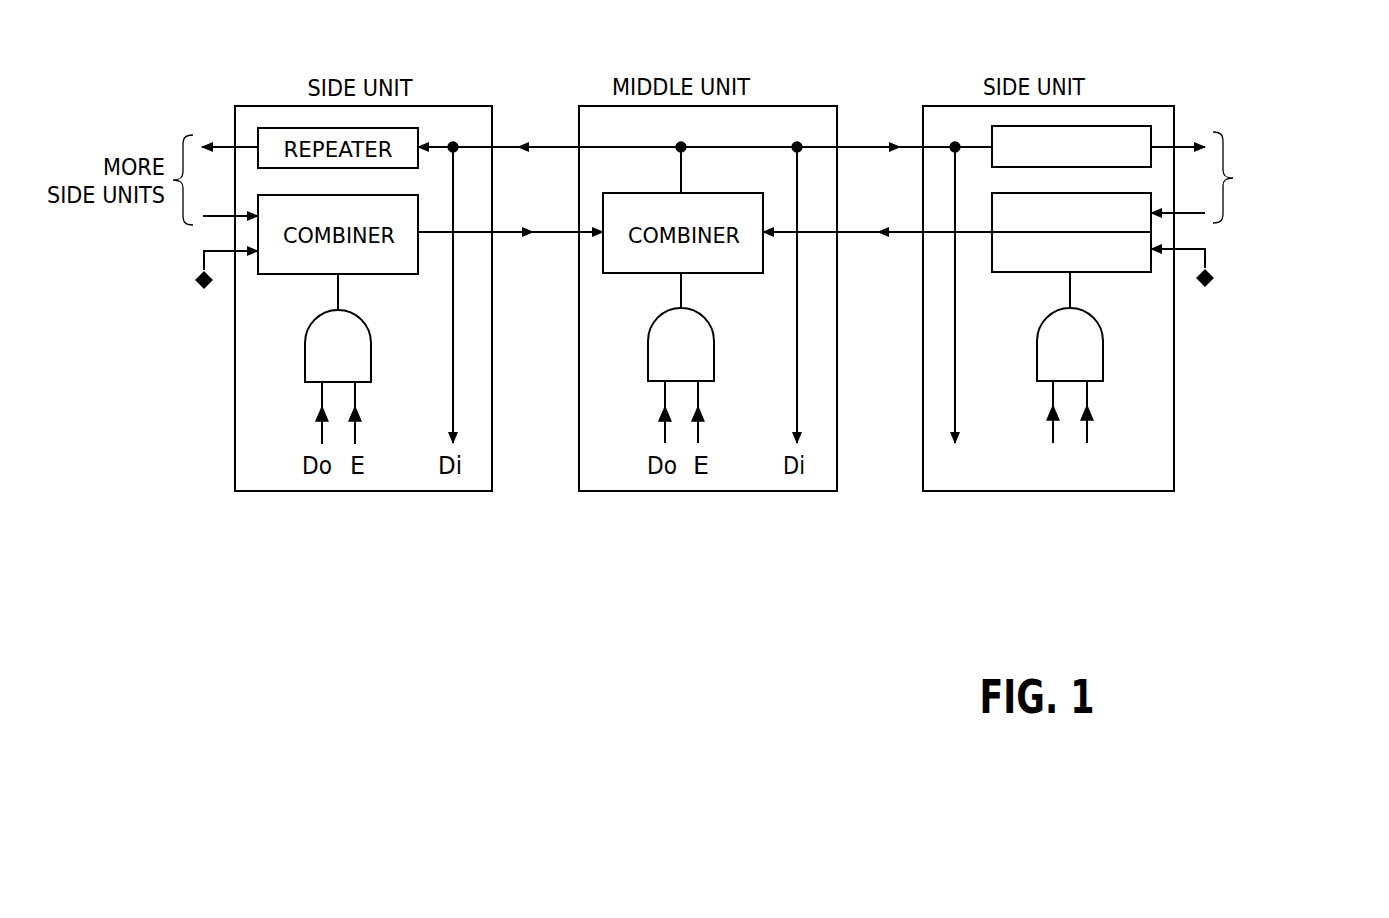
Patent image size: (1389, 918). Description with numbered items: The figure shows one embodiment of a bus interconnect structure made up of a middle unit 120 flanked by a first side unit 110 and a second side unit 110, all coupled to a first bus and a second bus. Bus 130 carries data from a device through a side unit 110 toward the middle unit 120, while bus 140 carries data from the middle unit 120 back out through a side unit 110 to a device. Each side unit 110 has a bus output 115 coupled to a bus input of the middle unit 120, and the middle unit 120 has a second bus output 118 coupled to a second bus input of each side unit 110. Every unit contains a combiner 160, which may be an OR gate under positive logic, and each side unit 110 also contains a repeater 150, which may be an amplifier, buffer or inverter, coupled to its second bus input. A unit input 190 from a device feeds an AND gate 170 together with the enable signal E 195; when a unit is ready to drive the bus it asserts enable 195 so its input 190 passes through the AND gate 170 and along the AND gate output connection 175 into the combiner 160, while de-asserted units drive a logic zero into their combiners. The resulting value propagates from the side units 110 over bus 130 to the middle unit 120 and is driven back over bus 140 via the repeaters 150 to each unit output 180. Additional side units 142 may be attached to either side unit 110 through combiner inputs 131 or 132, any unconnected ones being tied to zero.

The side unit 110 is at (235, 455).
The middle unit 120 is at (767, 102).
The bus output 115 is at (784, 235).
The second bus output 118 is at (703, 156).
The bus 130 is at (845, 232).
The bus 140 is at (873, 147).
The repeater 150 is at (1092, 126).
The combiner 160 is at (1088, 273).
The AND gate 170 is at (1103, 360).
The AND gate output to combiner 175 is at (1068, 290).
The unit output 180 is at (958, 402).
The unit input 190 is at (1088, 433).
The enable signal E 195 is at (1052, 425).
The combiner input 131 is at (205, 218).
The combiner input 132 is at (197, 279).
The side units 142 is at (1317, 170).